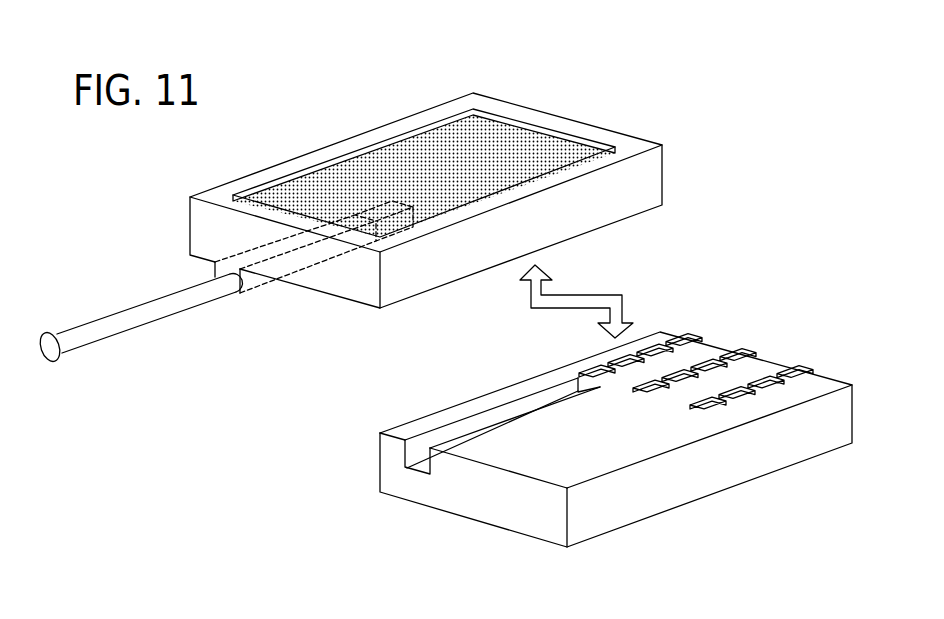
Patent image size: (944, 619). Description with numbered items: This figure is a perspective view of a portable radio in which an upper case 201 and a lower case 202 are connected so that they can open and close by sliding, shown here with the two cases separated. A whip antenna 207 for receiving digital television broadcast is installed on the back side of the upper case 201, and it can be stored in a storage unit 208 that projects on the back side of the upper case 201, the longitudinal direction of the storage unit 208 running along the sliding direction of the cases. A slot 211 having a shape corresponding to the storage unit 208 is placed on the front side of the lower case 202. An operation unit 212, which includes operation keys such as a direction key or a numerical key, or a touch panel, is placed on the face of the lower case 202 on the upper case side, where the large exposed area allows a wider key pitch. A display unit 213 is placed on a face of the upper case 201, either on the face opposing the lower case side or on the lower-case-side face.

The upper case 201 is at (615, 138).
The display unit 213 is at (512, 117).
The whip antenna 207 is at (140, 313).
The storage unit 208 is at (258, 280).
The lower case 202 is at (817, 383).
The slot 211 is at (450, 433).
The operation unit 212 is at (682, 347).